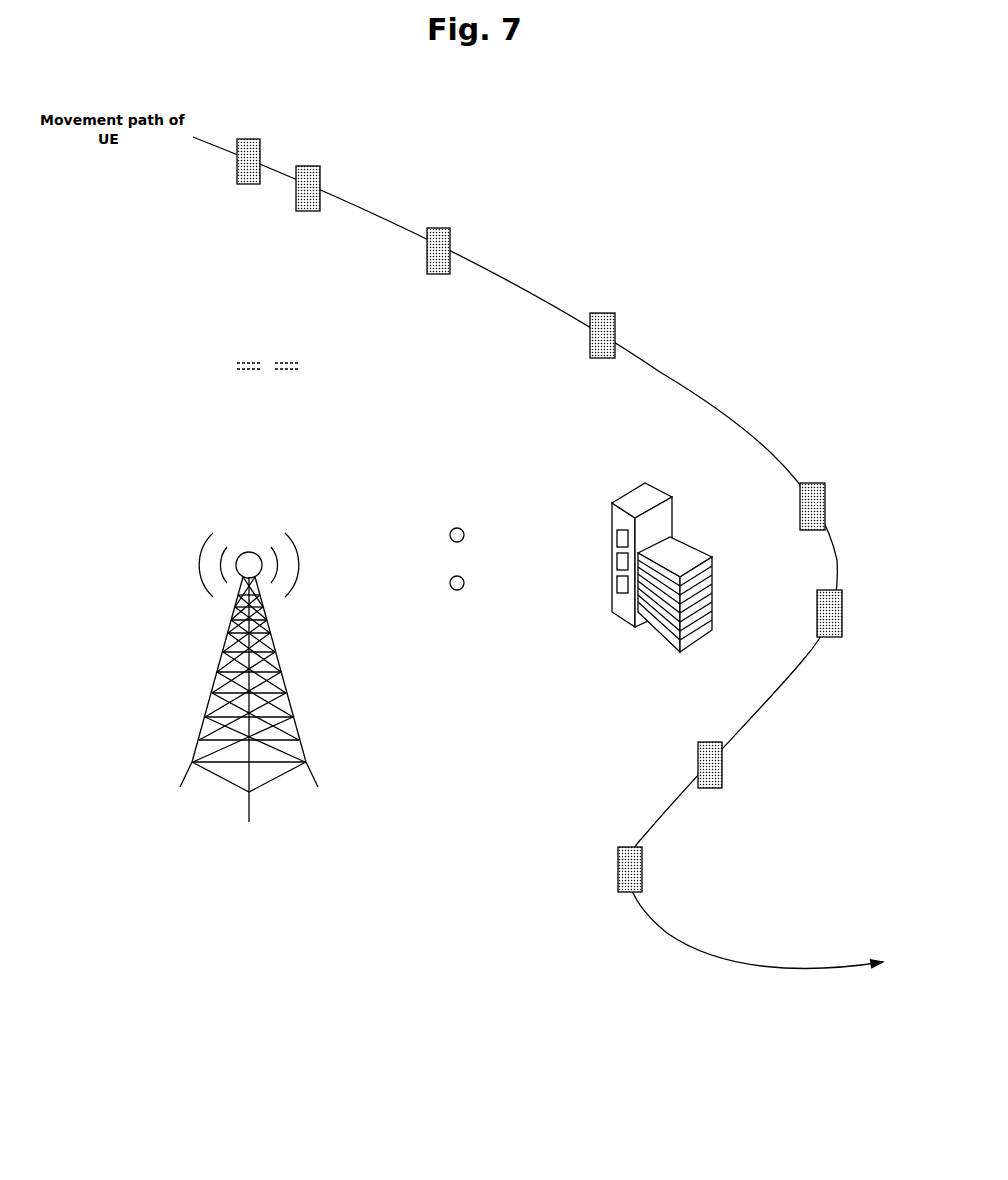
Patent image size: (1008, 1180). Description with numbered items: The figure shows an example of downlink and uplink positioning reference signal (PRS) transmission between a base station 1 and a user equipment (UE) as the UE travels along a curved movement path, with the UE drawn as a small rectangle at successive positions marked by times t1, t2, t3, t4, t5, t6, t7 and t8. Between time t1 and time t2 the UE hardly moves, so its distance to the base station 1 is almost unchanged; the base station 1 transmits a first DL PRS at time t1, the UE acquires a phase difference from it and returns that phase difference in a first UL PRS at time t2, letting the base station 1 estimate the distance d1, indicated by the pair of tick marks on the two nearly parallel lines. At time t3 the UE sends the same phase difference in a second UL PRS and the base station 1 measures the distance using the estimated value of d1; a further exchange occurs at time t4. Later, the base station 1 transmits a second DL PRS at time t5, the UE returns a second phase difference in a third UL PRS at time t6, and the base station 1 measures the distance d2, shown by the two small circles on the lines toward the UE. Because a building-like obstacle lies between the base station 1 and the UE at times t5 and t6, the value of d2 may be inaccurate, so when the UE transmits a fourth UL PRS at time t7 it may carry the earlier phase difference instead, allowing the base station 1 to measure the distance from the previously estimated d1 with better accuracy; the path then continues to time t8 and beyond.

The base station 1 is at (249, 703).
The time t1 is at (249, 210).
The time t2 is at (268, 492).
The time t3 is at (286, 501).
The time t4 is at (302, 510).
The time t5 is at (764, 511).
The time t6 is at (314, 573).
The time t7 is at (310, 592).
The time t8 is at (306, 610).
The distance d1 is at (268, 349).
The distance d2 is at (469, 559).